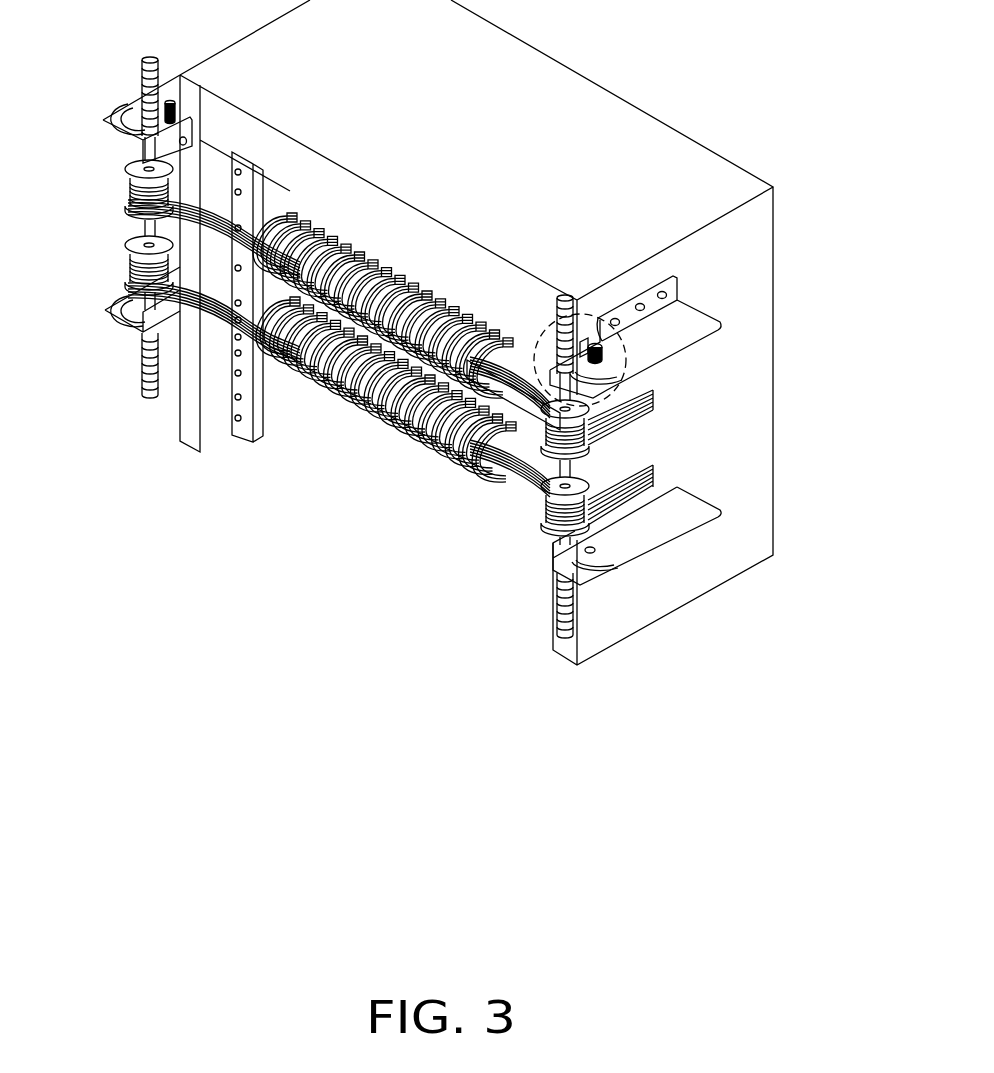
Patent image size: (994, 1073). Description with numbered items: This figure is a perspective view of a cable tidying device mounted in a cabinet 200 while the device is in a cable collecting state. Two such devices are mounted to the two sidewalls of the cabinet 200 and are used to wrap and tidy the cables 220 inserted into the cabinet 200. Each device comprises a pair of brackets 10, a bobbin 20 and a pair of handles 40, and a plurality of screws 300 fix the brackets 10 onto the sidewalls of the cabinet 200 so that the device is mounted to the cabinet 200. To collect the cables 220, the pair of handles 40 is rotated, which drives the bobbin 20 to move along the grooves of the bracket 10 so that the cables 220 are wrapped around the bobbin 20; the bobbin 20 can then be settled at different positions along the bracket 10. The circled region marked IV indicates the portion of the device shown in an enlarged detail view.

The cabinet 200 is at (600, 117).
The bracket 10 is at (118, 115).
The bobbin 20 is at (137, 245).
The handle 40 is at (143, 358).
The cables 220 is at (220, 328).
The screw 300 is at (665, 295).
The detail view circle IV is at (630, 340).